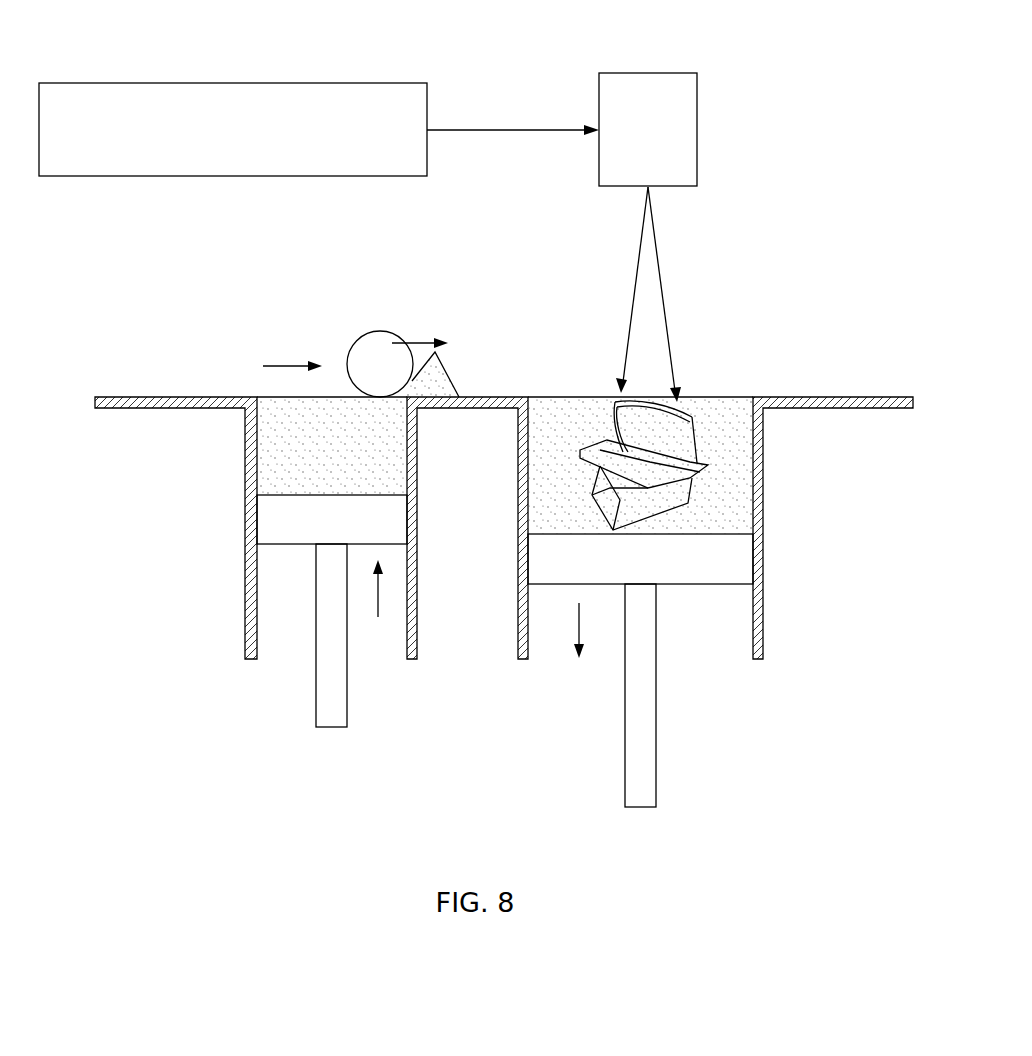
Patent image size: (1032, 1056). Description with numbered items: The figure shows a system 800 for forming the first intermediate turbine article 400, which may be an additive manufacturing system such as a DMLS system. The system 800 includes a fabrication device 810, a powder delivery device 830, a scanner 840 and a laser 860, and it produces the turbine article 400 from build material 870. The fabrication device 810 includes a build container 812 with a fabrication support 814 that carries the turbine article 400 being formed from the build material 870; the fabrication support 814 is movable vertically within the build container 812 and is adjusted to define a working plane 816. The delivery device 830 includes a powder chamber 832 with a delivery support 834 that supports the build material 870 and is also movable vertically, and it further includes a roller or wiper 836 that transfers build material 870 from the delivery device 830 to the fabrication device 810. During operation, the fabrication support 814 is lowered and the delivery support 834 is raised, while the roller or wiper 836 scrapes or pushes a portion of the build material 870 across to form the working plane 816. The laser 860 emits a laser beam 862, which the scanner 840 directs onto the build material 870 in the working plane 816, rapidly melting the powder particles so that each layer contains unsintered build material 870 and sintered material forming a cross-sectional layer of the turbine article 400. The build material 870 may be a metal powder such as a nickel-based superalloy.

The system 800 is at (818, 92).
The fabrication device 810 is at (798, 536).
The build container 812 is at (765, 425).
The fabrication support 814 is at (745, 560).
The working plane 816 is at (727, 398).
The powder delivery device 830 is at (158, 507).
The powder chamber 832 is at (257, 460).
The delivery support 834 is at (265, 526).
The roller or wiper 836 is at (380, 331).
The scanner 840 is at (650, 73).
The laser 860 is at (240, 83).
The laser beam 862 is at (513, 130).
The build material 870 is at (267, 437).
The first intermediate turbine article 400 is at (687, 445).